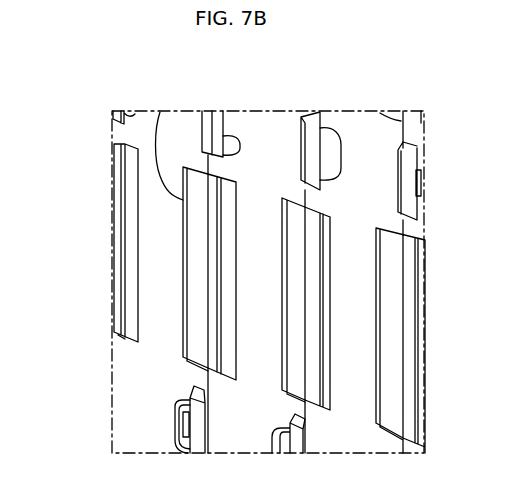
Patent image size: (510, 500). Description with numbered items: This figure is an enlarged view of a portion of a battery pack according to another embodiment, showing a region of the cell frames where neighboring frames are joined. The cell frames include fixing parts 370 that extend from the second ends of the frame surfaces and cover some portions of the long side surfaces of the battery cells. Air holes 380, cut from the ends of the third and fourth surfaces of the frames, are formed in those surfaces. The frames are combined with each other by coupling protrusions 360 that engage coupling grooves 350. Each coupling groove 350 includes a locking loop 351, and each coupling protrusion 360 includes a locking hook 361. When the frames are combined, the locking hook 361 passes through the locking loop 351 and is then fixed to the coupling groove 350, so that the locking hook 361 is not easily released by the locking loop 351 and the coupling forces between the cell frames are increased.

The coupling groove 350 is at (341, 157).
The locking loop 351 is at (302, 118).
The coupling protrusion 360 is at (190, 397).
The locking hook 361 is at (183, 418).
The fixing part 370 is at (219, 186).
The air hole 380 is at (160, 112).